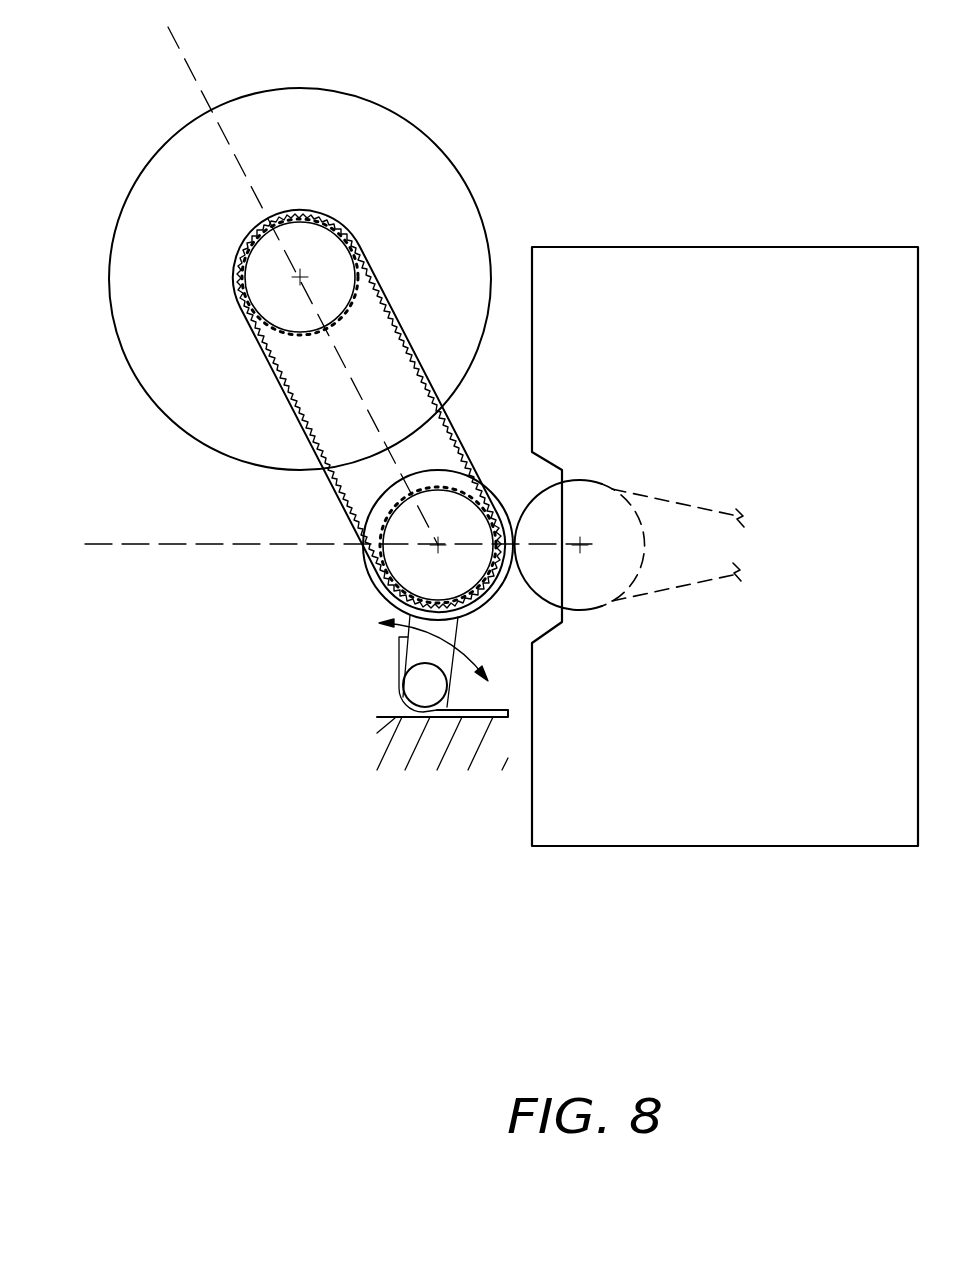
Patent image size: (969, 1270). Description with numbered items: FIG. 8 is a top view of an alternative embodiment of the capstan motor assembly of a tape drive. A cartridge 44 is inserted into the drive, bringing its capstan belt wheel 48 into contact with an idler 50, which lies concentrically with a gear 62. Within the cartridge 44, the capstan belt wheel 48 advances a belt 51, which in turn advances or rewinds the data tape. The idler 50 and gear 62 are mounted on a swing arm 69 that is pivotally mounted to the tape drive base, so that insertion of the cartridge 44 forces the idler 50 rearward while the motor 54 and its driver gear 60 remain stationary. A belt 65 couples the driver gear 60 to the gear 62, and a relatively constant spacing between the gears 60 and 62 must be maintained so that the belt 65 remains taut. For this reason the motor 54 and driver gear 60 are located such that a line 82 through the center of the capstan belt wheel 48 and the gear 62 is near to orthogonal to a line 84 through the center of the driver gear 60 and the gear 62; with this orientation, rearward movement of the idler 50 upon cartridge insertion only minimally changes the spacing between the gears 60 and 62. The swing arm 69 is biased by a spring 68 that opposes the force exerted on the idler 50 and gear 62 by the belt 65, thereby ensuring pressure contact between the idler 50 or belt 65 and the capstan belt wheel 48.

The cartridge 44 is at (795, 789).
The capstan belt wheel 48 is at (585, 482).
The idler 50 is at (380, 597).
The belt 51 is at (685, 500).
The motor 54 is at (452, 153).
The driver gear 60 is at (240, 248).
The gear 62 is at (380, 572).
The belt 65 is at (302, 430).
The spring 68 is at (397, 702).
The swing arm 69 is at (415, 647).
The line through the center of the capstan belt wheel and gear 62 82 is at (182, 547).
The line through the center of gear 60 and gear 62 84 is at (196, 78).